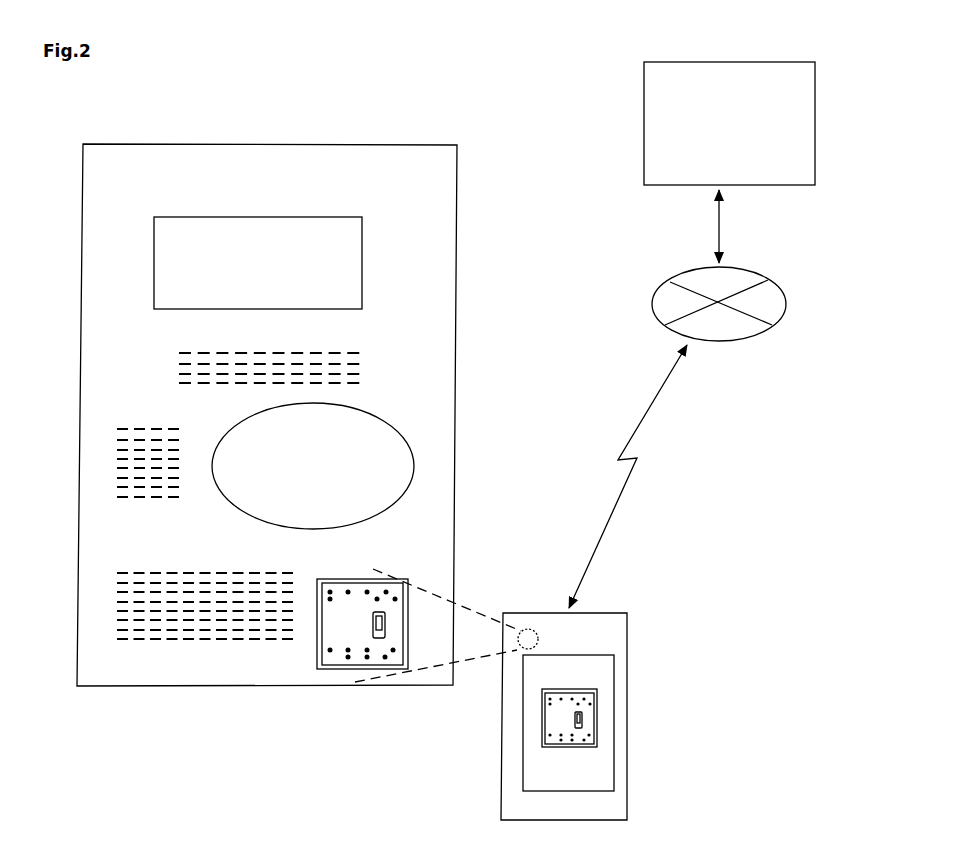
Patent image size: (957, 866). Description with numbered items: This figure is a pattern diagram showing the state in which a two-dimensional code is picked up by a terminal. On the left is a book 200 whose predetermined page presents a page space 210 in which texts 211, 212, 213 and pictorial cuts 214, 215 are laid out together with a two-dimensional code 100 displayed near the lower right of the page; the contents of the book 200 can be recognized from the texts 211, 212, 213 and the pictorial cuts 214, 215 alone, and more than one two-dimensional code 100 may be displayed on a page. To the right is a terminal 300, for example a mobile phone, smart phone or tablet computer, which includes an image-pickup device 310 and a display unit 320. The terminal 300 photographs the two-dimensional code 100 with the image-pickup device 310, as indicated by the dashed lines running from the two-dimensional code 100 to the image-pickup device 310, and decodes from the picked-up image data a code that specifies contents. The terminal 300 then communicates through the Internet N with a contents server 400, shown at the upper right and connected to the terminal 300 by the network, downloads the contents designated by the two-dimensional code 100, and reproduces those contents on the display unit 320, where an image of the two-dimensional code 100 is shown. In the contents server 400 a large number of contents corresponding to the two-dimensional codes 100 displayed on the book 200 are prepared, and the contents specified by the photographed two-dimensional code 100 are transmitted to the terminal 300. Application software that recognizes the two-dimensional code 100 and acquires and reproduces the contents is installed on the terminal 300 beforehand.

The two-dimensional code 100 is at (343, 667).
The book 200 is at (428, 120).
The page space 210 is at (212, 668).
The text 211 is at (175, 365).
The text 212 is at (115, 455).
The text 213 is at (117, 595).
The pictorial cut 214 is at (168, 270).
The pictorial cut 215 is at (238, 503).
The terminal 300 is at (628, 610).
The image-pickup device 310 is at (530, 629).
The display unit 320 is at (615, 722).
The contents server 400 is at (667, 62).
The Internet N is at (760, 275).